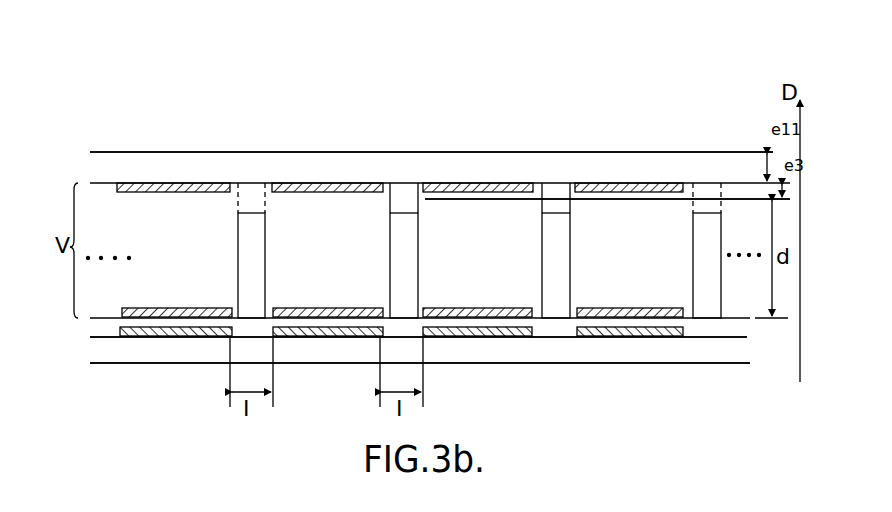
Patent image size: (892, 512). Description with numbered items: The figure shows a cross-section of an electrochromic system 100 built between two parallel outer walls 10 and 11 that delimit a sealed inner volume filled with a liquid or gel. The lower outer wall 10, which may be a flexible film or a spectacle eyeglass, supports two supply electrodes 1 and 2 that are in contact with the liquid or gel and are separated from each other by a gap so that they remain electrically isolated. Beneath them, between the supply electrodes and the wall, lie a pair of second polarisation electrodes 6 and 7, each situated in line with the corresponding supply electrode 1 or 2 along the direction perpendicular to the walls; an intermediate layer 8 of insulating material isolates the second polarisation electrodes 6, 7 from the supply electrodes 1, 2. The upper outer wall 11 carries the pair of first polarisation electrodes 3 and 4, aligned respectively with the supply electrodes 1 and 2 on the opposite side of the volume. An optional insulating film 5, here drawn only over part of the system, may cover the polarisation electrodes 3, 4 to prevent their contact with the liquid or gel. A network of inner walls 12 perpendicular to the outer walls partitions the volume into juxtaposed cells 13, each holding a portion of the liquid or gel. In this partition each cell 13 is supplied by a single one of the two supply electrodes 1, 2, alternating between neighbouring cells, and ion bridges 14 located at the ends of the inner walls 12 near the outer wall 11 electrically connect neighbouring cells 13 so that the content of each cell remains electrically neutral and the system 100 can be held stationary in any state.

The electrochromic system 100 is at (647, 127).
The outer wall 11 is at (743, 165).
The insulating film 5 is at (717, 190).
The first polarisation electrode 3 is at (190, 187).
The first polarisation electrode 4 is at (297, 187).
The ion bridge 14 is at (250, 207).
The inner wall 12 is at (257, 288).
The cell 13 is at (168, 252).
The supply electrode 1 is at (175, 312).
The supply electrode 2 is at (300, 310).
The second polarisation electrode 6 is at (208, 334).
The second polarisation electrode 7 is at (352, 334).
The intermediate layer 8 is at (728, 327).
The outer wall 10 is at (707, 350).